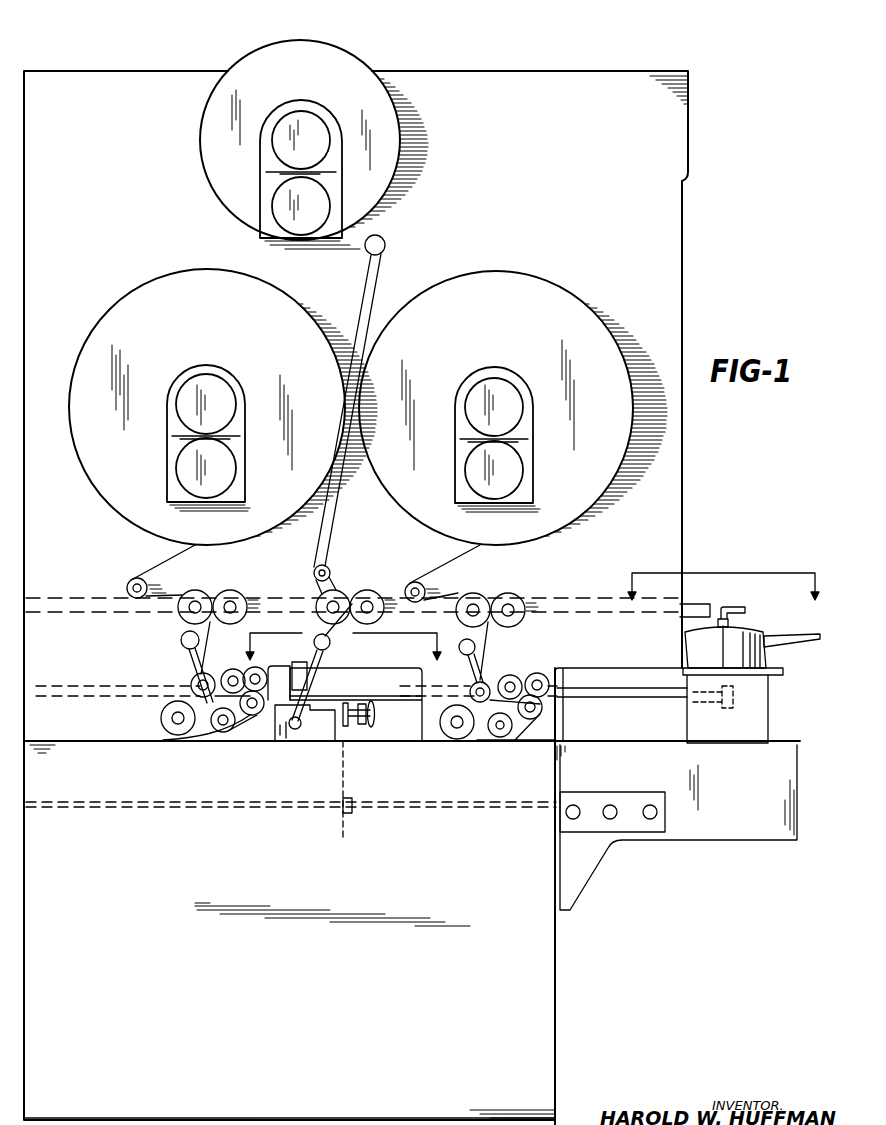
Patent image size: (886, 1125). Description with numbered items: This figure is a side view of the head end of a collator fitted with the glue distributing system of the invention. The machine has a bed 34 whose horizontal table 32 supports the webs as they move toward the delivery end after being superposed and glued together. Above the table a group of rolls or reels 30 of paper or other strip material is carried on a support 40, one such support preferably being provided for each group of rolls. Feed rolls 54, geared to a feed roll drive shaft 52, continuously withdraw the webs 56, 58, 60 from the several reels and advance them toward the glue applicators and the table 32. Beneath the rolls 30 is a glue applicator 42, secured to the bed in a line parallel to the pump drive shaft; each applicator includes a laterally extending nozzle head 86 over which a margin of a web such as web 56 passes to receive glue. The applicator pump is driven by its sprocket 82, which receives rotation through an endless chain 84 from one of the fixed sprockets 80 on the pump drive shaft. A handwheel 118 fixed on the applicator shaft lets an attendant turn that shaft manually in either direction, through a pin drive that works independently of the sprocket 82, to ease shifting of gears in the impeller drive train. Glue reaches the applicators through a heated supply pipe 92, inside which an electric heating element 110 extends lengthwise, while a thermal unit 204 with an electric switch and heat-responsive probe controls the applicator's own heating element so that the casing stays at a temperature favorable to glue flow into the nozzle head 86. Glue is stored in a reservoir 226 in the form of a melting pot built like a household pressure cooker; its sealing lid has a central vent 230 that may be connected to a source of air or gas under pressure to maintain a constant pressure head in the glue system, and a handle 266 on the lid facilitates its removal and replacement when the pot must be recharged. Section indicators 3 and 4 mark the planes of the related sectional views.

The rolls or reels 30 is at (210, 143).
The support 40 is at (670, 214).
The web 56 is at (172, 565).
The web 58 is at (323, 545).
The web 60 is at (450, 570).
The feed rolls 54 is at (230, 591).
The feed roll drive shaft 52 is at (698, 604).
The section line 3- 3 is at (723, 576).
The section line 4- 4 is at (343, 636).
The electric heating element 110 is at (33, 686).
The thermal unit 204 is at (297, 674).
The supply pipe 92 is at (405, 668).
The horizontal table 32 is at (98, 740).
The nozzle head 86 is at (256, 741).
The glue applicator 42 is at (306, 741).
The sprocket 82 is at (346, 727).
The handwheel 118 is at (378, 728).
The endless chain 84 is at (355, 793).
The fixed sprocket 80 is at (345, 830).
The bed 34 is at (548, 1033).
The reservoir 226 is at (730, 640).
The central vent 230 is at (728, 607).
The handle 266 is at (783, 634).